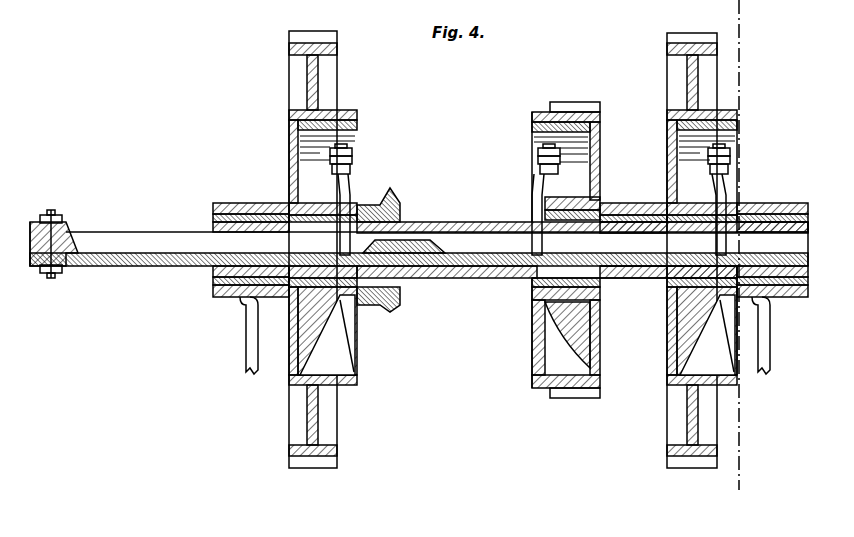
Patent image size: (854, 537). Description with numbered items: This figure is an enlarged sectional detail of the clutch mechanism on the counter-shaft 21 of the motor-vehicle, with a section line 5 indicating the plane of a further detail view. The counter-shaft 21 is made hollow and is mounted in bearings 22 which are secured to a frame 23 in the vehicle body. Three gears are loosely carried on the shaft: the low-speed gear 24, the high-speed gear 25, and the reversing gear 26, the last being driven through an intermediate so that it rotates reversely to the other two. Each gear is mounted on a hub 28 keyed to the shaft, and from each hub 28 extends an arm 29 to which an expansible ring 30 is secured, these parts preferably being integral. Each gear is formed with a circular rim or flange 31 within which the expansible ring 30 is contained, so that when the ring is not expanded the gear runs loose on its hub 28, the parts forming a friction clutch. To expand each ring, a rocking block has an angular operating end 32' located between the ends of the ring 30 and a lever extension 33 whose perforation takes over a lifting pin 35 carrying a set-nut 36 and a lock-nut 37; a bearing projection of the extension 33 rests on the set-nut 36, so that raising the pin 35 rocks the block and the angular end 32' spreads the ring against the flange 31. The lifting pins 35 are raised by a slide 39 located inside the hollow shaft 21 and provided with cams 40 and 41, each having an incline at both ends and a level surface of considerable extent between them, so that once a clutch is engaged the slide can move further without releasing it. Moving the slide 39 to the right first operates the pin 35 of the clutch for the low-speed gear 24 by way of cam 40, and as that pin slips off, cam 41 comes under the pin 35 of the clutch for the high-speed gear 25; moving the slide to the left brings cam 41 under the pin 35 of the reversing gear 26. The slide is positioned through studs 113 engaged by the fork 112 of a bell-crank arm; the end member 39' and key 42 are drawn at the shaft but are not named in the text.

The section line 5 is at (746, 246).
The counter-shaft 21 is at (462, 222).
The bearings 22 is at (240, 200).
The frame 23 is at (246, 342).
The gear 24 is at (712, 24).
The gear 25 is at (586, 92).
The gear 26 is at (289, 44).
The hub 28 is at (289, 203).
The arm 29 is at (357, 340).
The expansible ring 30 is at (357, 125).
The circular rim or flange 31 is at (357, 112).
The angular operating end 32' is at (495, 152).
The lever extension 33 is at (352, 150).
The lifting pin 35 is at (340, 238).
The set-nut 36 is at (352, 160).
The lock-nut 37 is at (350, 170).
The slide 39 is at (621, 250).
The shaft end cap 39' is at (90, 252).
The cam 40 is at (633, 256).
The cam 41 is at (438, 246).
The key 42 is at (396, 196).
The fork 112 is at (62, 218).
The studs 113 is at (51, 210).